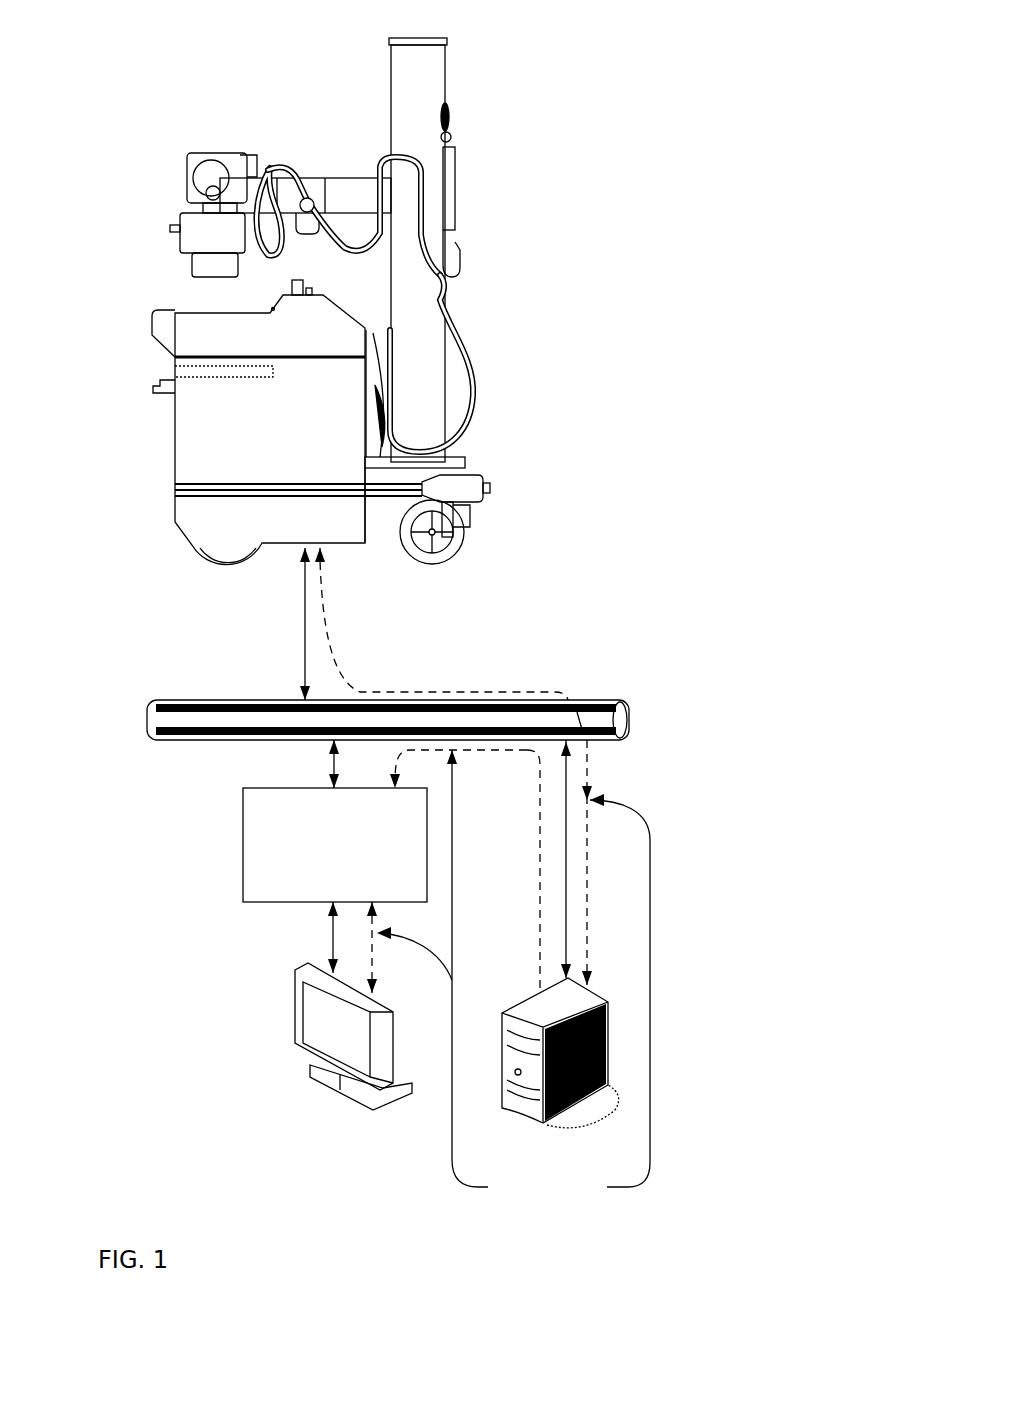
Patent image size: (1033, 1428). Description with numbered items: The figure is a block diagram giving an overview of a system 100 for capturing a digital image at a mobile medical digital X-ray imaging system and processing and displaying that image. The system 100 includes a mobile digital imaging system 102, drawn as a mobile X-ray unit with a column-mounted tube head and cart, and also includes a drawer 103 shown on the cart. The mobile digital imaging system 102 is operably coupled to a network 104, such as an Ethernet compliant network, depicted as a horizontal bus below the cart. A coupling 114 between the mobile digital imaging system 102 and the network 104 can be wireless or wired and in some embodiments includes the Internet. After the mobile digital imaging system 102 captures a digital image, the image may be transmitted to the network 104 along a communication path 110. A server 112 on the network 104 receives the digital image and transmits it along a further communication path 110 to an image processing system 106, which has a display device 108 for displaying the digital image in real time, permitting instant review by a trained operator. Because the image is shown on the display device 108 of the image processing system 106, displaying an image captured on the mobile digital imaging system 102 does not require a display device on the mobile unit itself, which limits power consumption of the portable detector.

The system 100 is at (697, 1285).
The mobile digital imaging system 102 is at (430, 77).
The drawer 103 is at (173, 370).
The network 104 is at (232, 742).
The image processing system 106 is at (243, 843).
The display device 108 is at (295, 1008).
The communication path 110 is at (498, 693).
The server 112 is at (550, 1127).
The coupling 114 is at (305, 610).